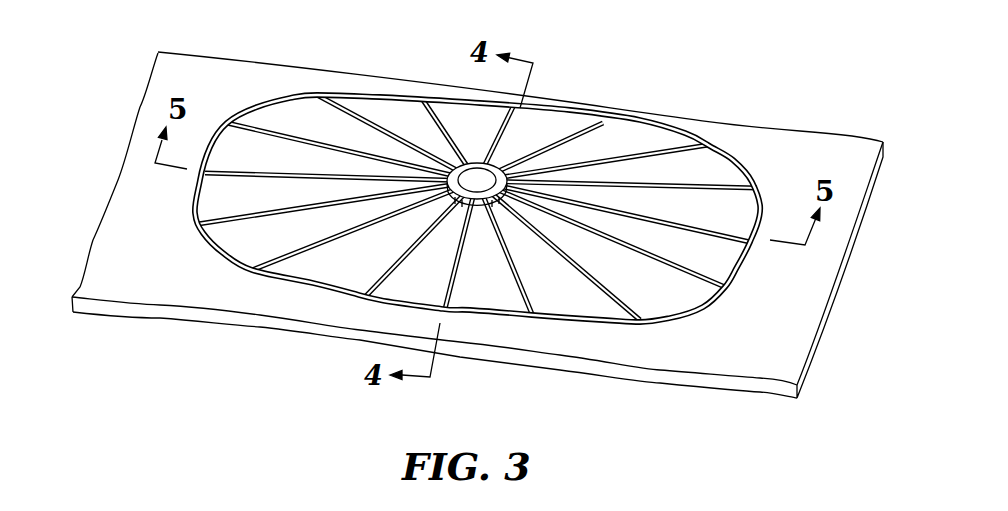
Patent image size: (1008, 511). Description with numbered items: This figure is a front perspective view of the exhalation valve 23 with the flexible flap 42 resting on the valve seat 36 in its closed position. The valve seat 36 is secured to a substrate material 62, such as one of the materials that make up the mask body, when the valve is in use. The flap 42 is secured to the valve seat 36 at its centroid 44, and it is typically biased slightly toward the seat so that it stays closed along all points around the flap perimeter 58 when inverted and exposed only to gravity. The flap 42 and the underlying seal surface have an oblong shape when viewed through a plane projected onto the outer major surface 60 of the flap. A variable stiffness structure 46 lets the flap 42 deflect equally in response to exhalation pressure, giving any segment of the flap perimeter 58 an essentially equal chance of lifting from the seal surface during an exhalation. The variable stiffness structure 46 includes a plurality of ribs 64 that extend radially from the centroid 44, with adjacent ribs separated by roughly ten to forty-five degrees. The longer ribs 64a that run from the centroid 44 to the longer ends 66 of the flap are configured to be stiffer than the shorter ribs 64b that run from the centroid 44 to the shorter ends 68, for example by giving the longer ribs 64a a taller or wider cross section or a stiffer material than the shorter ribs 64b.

The exhalation valve 23 is at (367, 88).
The valve seat 36 is at (380, 312).
The flexible flap 42 is at (718, 142).
The centroid 44 is at (481, 178).
The variable stiffness structure 46 is at (557, 130).
The flap perimeter 58 is at (677, 297).
The outer major surface 60 is at (266, 250).
The substrate material 62 is at (773, 343).
The ribs 64 is at (537, 298).
The longer ribs 64a is at (270, 167).
The shorter ribs 64b is at (440, 276).
The longer ends 66 is at (223, 200).
The shorter ends 68 is at (467, 127).